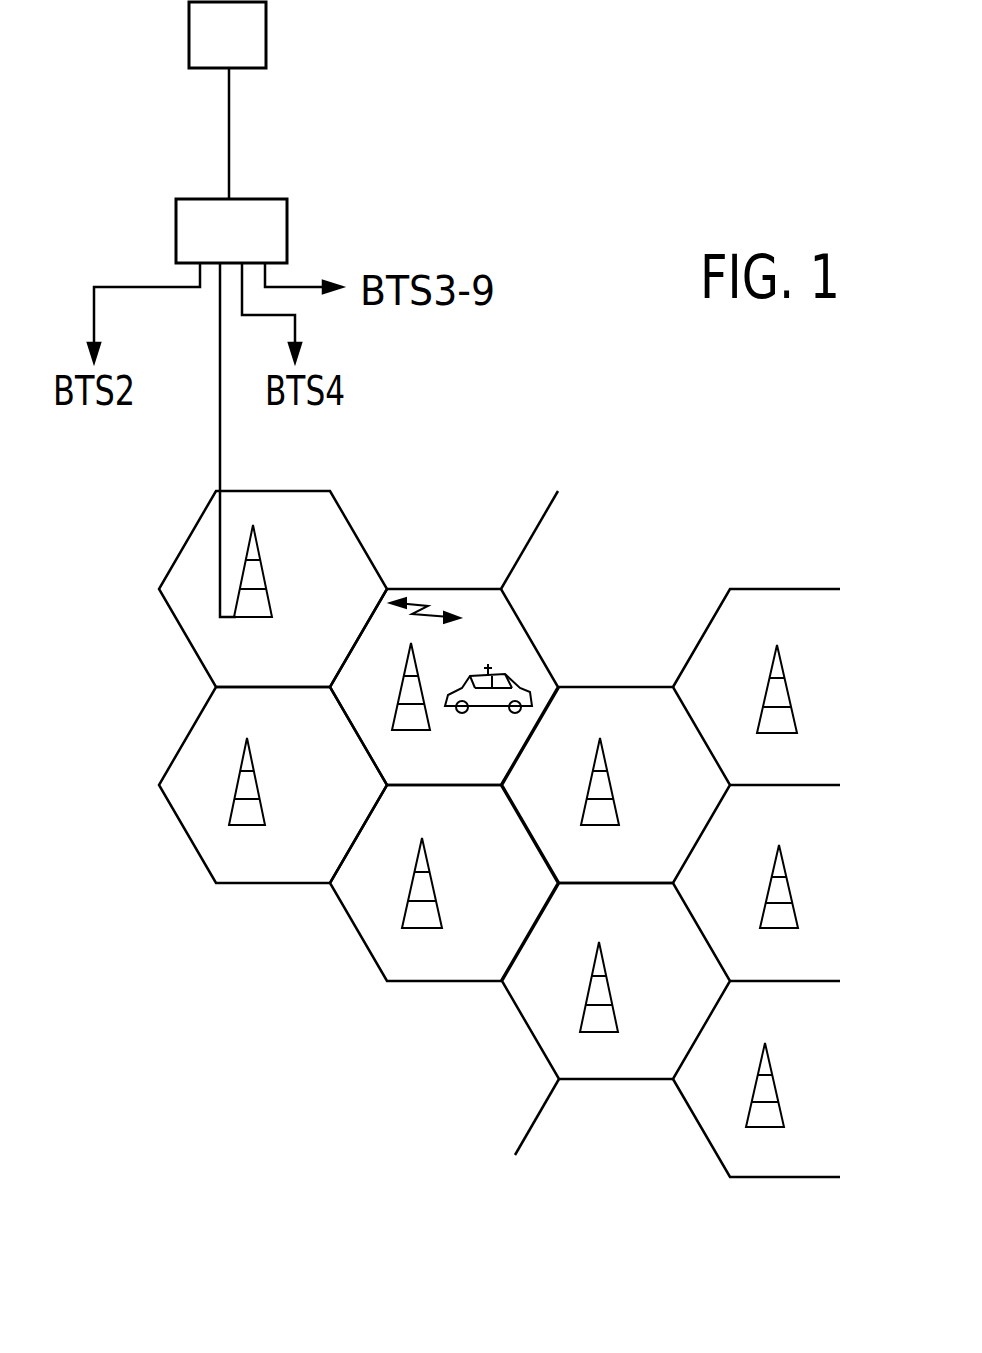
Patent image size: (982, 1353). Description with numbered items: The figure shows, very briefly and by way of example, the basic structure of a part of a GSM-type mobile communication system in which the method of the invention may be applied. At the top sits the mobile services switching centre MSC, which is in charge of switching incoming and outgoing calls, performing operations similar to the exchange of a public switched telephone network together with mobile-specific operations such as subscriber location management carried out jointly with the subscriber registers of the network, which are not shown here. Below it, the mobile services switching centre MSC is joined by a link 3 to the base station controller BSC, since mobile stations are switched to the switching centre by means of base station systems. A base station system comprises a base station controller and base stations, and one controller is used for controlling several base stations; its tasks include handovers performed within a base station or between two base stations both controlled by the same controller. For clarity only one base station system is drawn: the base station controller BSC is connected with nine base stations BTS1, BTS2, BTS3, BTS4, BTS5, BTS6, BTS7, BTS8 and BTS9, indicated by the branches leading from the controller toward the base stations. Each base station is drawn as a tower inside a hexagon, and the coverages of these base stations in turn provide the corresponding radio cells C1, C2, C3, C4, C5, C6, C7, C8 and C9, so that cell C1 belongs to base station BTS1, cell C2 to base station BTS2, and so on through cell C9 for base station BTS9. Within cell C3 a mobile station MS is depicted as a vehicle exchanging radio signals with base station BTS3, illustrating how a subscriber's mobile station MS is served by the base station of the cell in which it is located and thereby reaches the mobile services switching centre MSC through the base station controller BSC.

The link between mobile switching center and base station controller 3 is at (229, 132).
The mobile services switching centre MSC is at (227, 35).
The base station controller BSC is at (231, 231).
The mobile station MS is at (461, 655).
The radio cell C1 is at (188, 630).
The radio cell C2 is at (190, 840).
The radio cell C3 is at (450, 589).
The radio cell C4 is at (362, 952).
The radio cell C5 is at (622, 688).
The radio cell C6 is at (625, 1083).
The radio cell C7 is at (777, 788).
The radio cell C8 is at (787, 985).
The radio cell C9 is at (785, 1180).
The base station BTS1 is at (264, 599).
The base station BTS2 is at (266, 808).
The base station BTS3 is at (440, 712).
The base station BTS4 is at (440, 910).
The base station BTS5 is at (616, 809).
The base station BTS6 is at (613, 1013).
The base station BTS7 is at (792, 713).
The base station BTS8 is at (790, 913).
The base station BTS9 is at (781, 1113).